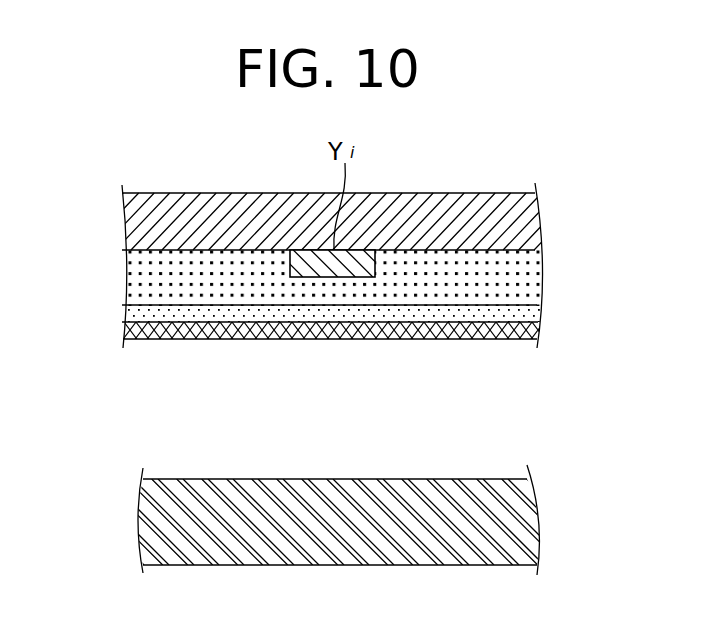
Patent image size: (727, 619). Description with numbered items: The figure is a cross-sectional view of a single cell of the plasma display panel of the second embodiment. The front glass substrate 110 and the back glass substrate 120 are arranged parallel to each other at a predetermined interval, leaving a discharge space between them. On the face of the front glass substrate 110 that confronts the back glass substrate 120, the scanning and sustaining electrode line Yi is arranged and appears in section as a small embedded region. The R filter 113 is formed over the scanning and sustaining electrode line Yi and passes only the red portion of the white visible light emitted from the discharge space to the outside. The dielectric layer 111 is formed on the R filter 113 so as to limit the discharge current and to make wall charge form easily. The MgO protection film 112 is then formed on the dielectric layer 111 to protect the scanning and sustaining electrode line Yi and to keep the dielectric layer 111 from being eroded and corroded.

The front glass substrate 110 is at (505, 225).
The R filter 113 is at (520, 275).
The dielectric layer 111 is at (528, 312).
The MgO protection film 112 is at (537, 330).
The back glass substrate 120 is at (503, 531).